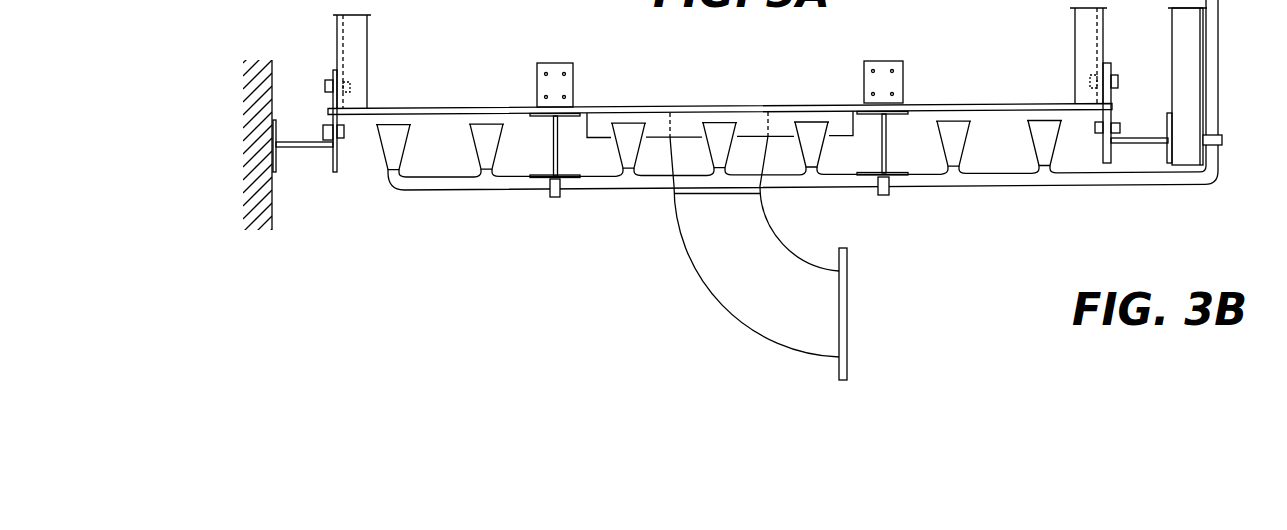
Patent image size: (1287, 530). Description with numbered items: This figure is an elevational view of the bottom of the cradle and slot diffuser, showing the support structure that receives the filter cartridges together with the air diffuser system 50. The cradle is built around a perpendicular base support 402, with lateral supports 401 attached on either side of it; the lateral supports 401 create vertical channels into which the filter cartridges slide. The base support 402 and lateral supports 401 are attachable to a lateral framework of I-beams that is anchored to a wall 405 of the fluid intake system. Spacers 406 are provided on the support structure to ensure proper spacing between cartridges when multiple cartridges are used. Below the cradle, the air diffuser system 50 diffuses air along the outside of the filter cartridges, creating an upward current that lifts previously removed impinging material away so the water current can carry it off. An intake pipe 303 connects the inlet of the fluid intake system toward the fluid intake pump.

The air diffuser system 50 is at (597, 236).
The intake pipe 303 is at (707, 278).
The lateral support 401 is at (342, 33).
The base support 402 is at (444, 111).
The wall 405 is at (248, 148).
The spacer 406 is at (555, 71).